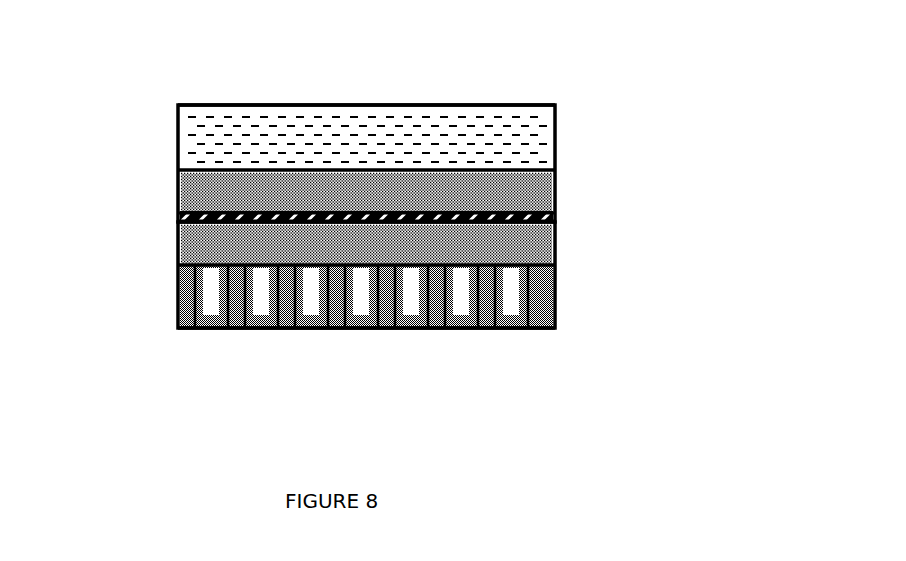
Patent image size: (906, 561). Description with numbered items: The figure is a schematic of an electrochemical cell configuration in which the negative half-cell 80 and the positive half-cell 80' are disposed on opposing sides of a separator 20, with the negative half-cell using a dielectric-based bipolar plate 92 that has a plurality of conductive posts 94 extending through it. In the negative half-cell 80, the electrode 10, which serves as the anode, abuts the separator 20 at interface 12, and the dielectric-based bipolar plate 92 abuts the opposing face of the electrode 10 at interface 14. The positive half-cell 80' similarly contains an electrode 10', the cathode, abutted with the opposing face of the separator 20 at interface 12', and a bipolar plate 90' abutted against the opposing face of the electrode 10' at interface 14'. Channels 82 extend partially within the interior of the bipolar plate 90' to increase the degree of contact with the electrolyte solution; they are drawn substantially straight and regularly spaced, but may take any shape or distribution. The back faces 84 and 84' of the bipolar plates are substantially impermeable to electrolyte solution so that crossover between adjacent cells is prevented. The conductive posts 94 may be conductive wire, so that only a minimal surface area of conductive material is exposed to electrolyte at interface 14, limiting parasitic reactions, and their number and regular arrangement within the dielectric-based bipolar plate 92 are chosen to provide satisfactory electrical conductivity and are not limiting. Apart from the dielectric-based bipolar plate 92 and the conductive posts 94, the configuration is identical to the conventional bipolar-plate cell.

The back face 84' is at (357, 66).
The channels 82 is at (402, 120).
The bipolar plate 90' is at (442, 115).
The electrode 10' is at (438, 170).
The separator 20 is at (556, 217).
The electrode 10 is at (436, 232).
The dielectric-based bipolar plate 92 is at (556, 308).
The positive half-cell 80' is at (479, 157).
The negative half-cell 80 is at (481, 275).
The interface 14' is at (308, 152).
The interface 12' is at (308, 195).
The interface 12 is at (315, 240).
The interface 14 is at (317, 286).
The conductive posts 94 is at (445, 328).
The back face 84 is at (384, 367).